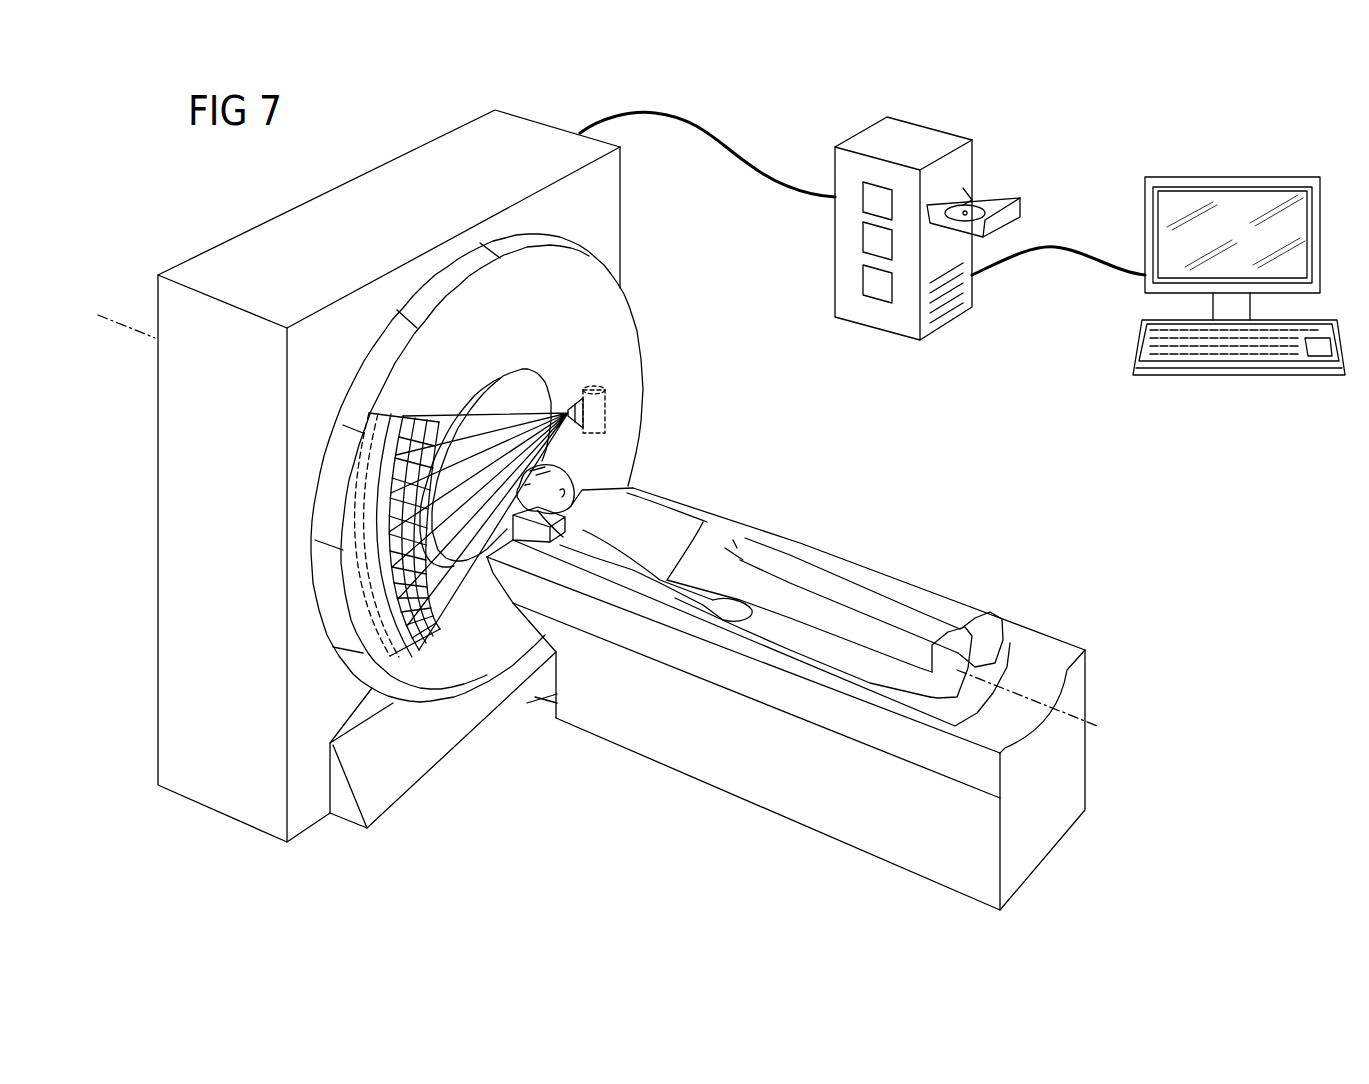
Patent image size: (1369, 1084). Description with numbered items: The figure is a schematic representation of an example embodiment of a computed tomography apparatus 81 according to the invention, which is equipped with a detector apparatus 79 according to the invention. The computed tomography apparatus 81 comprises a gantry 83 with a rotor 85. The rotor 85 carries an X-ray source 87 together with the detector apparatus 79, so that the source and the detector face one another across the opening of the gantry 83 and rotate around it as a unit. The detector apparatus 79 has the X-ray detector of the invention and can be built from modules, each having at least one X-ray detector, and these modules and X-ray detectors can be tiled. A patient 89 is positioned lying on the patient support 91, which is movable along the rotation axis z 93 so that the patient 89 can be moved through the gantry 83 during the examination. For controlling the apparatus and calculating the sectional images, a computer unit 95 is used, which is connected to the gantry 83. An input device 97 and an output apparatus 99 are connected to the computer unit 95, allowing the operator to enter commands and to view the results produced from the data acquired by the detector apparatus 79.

The detector apparatus 79 is at (398, 632).
The computed tomography apparatus 81 is at (142, 622).
The gantry 83 is at (210, 228).
The rotor 85 is at (634, 333).
The X-ray source 87 is at (606, 413).
The patient 89 is at (800, 553).
The patient support 91 is at (836, 820).
The rotation axis z 93 is at (122, 323).
The computer unit 95 is at (935, 138).
The input device 97 is at (1140, 342).
The output apparatus 99 is at (1150, 213).